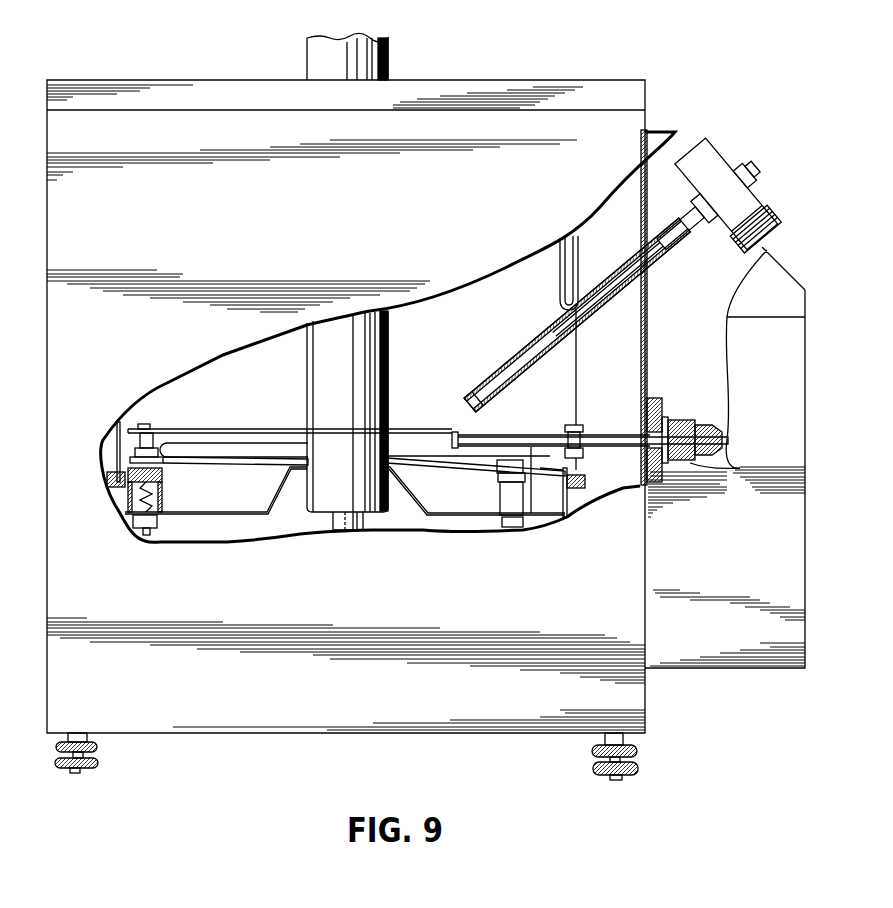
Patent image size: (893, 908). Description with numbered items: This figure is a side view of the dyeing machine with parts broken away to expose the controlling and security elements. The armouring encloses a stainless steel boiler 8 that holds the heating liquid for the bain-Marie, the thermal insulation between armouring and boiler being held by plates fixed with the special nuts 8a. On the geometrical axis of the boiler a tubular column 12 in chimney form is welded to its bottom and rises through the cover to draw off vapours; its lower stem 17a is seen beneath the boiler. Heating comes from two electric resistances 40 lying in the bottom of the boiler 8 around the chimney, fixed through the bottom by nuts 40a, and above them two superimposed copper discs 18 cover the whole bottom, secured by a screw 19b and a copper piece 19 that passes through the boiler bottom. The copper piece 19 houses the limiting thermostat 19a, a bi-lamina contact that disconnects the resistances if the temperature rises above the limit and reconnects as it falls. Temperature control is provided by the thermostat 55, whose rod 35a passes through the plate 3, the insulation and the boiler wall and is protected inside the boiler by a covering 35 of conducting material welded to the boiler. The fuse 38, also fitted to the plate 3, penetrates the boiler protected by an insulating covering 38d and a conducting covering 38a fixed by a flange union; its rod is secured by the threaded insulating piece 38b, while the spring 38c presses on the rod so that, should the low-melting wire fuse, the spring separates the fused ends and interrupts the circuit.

The plate 3 is at (648, 310).
The boiler 8 is at (575, 357).
The special nuts 8a is at (565, 475).
The tubular column 12 is at (385, 346).
The stem 17a is at (363, 530).
The copper discs 18 is at (277, 432).
The copper piece 19 is at (128, 440).
The limiting thermostat 19a is at (145, 495).
The screw 19b is at (142, 424).
The covering 35 is at (597, 313).
The rod 35a is at (635, 263).
The fuse 38 is at (660, 482).
The covering 38a is at (465, 447).
The threaded insulating piece 38b is at (687, 418).
The spring 38c is at (598, 432).
The covering 38d is at (455, 432).
The resistances 40 is at (230, 448).
The nuts 40a is at (507, 473).
The thermostat 55 is at (723, 162).